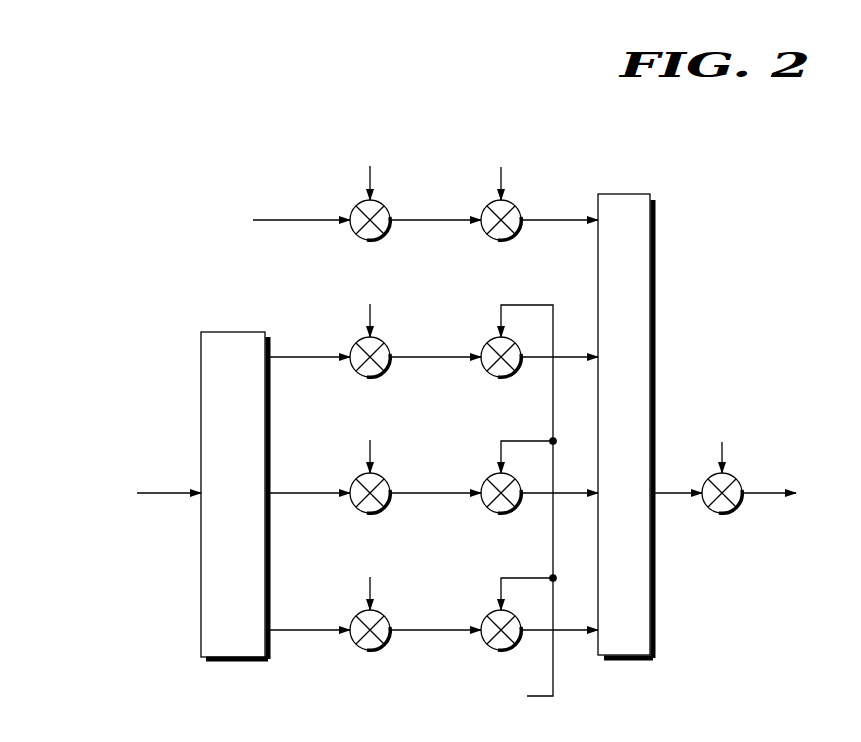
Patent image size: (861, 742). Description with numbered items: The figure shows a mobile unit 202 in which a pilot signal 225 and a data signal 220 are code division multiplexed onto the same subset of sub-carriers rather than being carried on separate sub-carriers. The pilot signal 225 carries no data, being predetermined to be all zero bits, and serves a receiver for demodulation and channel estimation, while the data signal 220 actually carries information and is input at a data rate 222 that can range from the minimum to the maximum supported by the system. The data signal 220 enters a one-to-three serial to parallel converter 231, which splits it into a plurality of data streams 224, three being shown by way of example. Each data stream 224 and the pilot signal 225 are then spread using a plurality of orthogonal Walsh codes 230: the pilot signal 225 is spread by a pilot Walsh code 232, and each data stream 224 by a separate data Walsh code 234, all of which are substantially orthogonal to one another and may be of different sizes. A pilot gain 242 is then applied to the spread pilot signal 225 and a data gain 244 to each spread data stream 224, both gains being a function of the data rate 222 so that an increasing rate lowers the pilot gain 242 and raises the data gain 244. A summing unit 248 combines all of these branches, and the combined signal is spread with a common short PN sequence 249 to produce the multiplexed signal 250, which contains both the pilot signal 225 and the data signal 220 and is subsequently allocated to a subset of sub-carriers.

The mobile unit 202 is at (572, 89).
The data signal 220 is at (99, 469).
The data rate 222 is at (51, 444).
The data streams 224 is at (304, 360).
The pilot signal 225 is at (209, 193).
The orthogonal Walsh codes 230 is at (407, 118).
The serial to parallel converter 231 is at (233, 331).
The pilot Walsh code 232 is at (365, 178).
The data Walsh codes 234 is at (365, 317).
The pilot gain 242 is at (497, 180).
The data gain 244 is at (554, 684).
The summing unit 248 is at (623, 194).
The PN sequence 249 is at (722, 515).
The multiplexed signal 250 is at (764, 491).